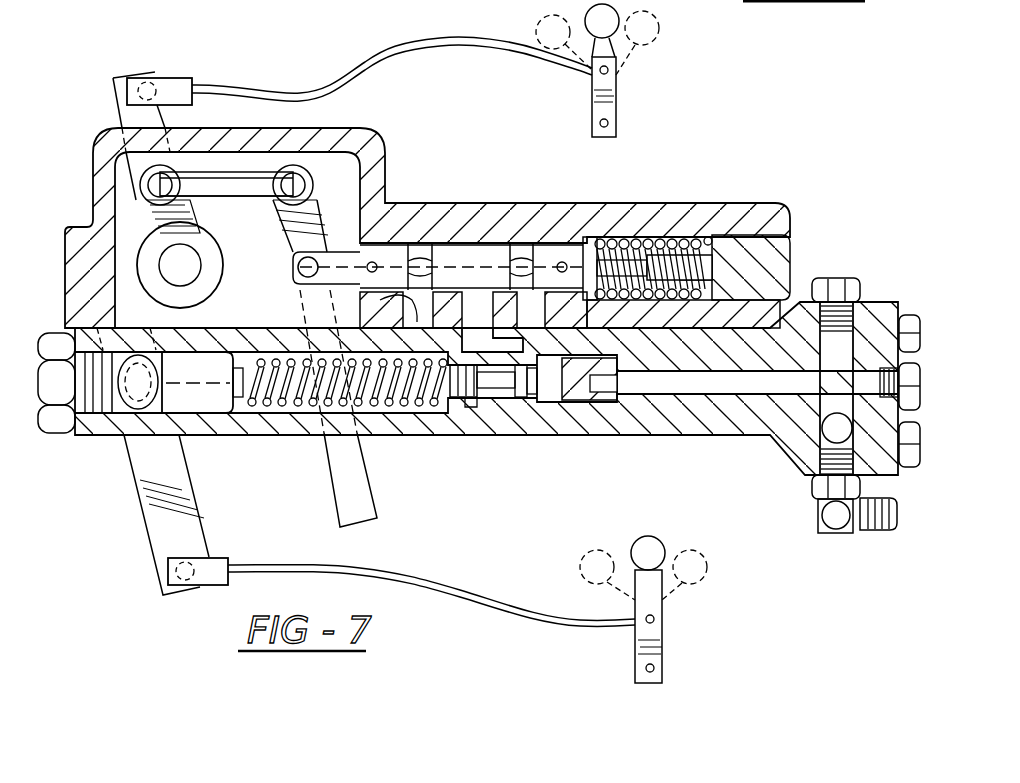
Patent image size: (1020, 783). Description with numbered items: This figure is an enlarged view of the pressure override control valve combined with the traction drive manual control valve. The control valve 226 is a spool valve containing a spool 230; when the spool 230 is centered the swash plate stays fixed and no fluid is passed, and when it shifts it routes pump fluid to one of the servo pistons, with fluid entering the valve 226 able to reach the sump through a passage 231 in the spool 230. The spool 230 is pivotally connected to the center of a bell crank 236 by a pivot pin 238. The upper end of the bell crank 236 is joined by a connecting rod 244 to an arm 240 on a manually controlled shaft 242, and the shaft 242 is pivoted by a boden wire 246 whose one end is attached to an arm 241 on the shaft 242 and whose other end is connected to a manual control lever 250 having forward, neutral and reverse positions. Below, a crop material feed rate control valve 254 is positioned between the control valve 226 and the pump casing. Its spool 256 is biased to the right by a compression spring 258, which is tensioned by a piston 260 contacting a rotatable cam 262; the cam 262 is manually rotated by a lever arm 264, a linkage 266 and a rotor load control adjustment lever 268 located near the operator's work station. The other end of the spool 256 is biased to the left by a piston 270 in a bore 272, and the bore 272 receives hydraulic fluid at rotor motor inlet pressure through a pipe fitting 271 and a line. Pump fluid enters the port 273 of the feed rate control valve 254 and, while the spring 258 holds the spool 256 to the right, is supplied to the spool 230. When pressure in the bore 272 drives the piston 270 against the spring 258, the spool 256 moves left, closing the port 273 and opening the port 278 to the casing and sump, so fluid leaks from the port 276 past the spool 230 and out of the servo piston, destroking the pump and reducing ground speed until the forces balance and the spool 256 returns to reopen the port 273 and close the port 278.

The control valve 226 is at (737, 204).
The spool 230 is at (466, 244).
The passage 231 is at (480, 270).
The bell crank 236 is at (338, 478).
The pivot pin 238 is at (305, 178).
The arm 240 is at (134, 178).
The arm 241 is at (122, 78).
The manually controlled shaft 242 is at (207, 193).
The connecting rod 244 is at (212, 172).
The boden wire 246 is at (392, 50).
The manual control lever 250 is at (618, 110).
The crop material feed rate control valve 254 is at (100, 436).
The spool 256 is at (506, 405).
The compression spring 258 is at (393, 410).
The piston 260 is at (222, 434).
The cam 262 is at (160, 436).
The lever arm 264 is at (148, 542).
The linkage 266 is at (588, 630).
The rotor load control adjustment lever 268 is at (665, 652).
The piston 270 is at (673, 394).
The pipe fitting 271 is at (866, 533).
The bore 272 is at (760, 385).
The port 273 is at (498, 410).
The port 276 is at (385, 297).
The port 278 is at (578, 405).